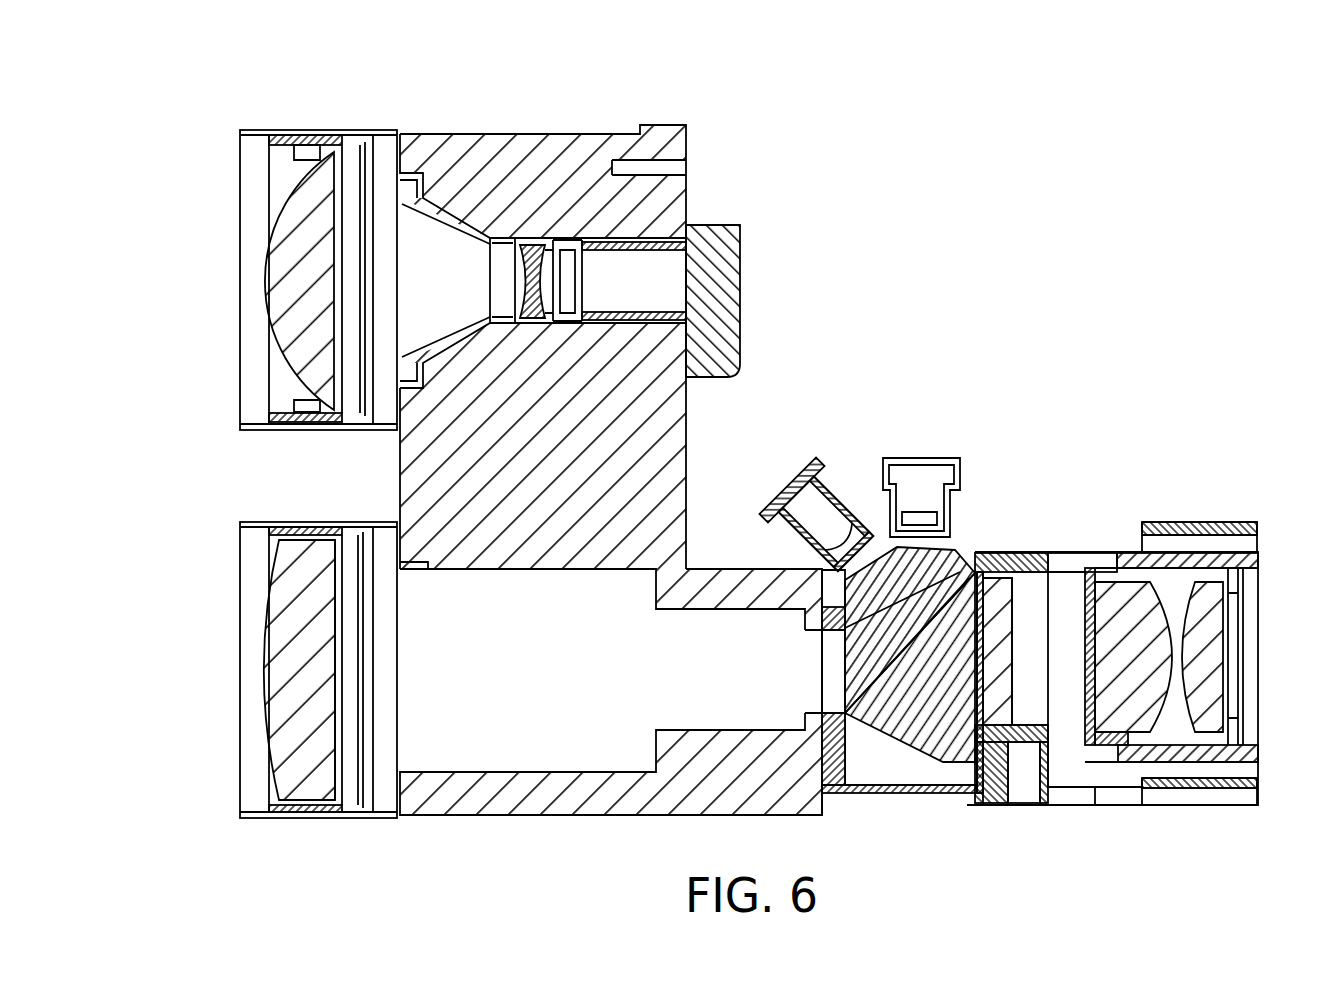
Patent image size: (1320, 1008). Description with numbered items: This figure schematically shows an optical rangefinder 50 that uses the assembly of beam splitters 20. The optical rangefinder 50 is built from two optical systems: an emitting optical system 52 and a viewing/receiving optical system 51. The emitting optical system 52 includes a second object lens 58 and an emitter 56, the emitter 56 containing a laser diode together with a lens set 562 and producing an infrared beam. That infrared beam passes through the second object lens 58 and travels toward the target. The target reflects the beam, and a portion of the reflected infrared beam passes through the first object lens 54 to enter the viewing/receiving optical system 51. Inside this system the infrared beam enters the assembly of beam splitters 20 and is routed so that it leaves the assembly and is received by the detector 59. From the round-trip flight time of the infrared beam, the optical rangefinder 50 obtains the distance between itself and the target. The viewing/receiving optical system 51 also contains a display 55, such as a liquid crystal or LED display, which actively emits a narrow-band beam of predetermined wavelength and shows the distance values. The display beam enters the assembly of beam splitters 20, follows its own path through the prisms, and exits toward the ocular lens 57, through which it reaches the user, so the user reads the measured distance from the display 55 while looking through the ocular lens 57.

The optical rangefinder 50 is at (212, 68).
The viewing/receiving optical system 51 is at (625, 816).
The emitting optical system 52 is at (458, 125).
The first object lens 54 is at (308, 796).
The display 55 is at (790, 472).
The emitter 56 is at (738, 58).
The lens set 562 is at (531, 243).
The ocular lens 57 is at (1215, 722).
The second object lens 58 is at (273, 279).
The detector 59 is at (922, 466).
The assembly of beam splitters 20 is at (898, 738).